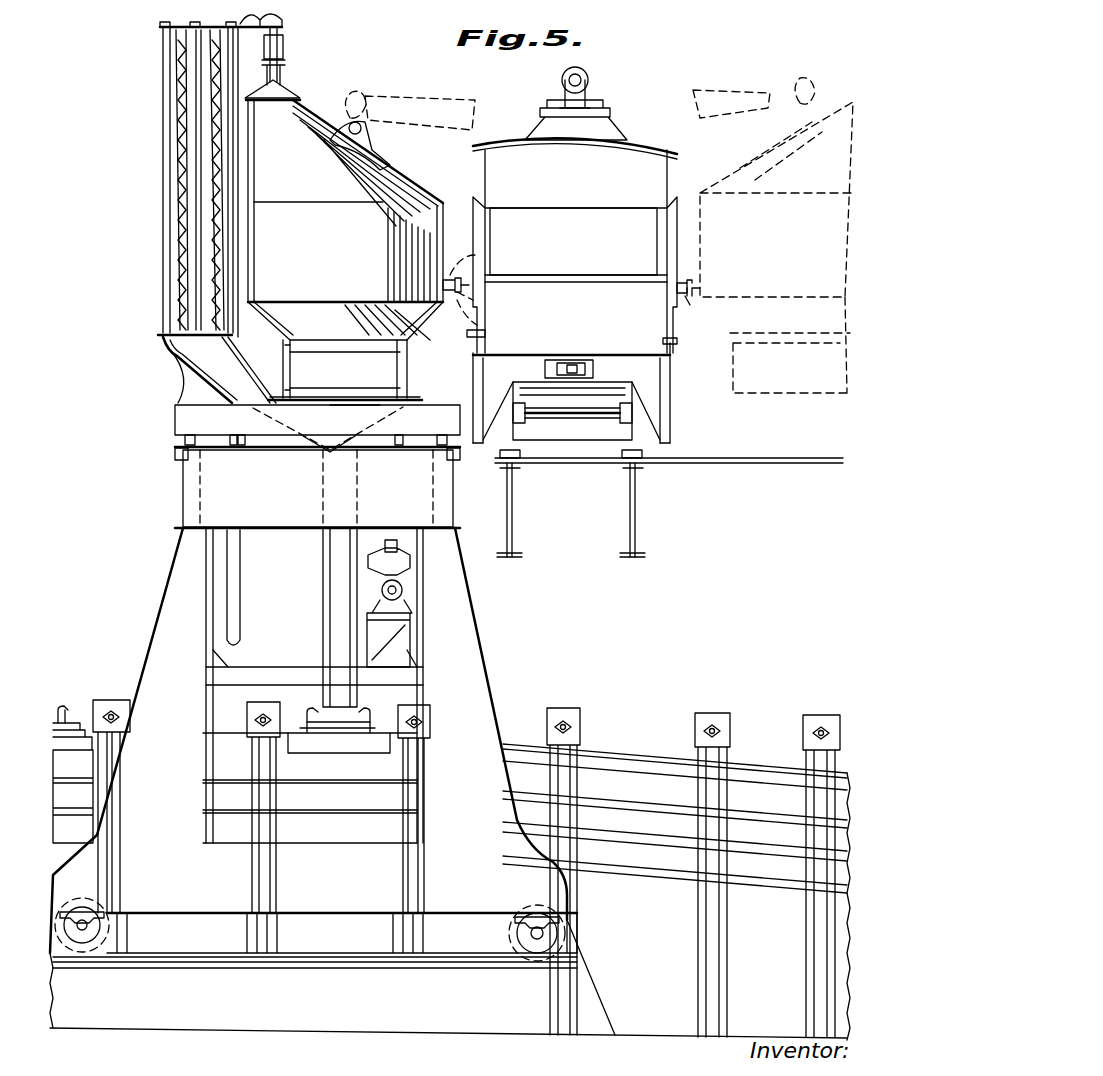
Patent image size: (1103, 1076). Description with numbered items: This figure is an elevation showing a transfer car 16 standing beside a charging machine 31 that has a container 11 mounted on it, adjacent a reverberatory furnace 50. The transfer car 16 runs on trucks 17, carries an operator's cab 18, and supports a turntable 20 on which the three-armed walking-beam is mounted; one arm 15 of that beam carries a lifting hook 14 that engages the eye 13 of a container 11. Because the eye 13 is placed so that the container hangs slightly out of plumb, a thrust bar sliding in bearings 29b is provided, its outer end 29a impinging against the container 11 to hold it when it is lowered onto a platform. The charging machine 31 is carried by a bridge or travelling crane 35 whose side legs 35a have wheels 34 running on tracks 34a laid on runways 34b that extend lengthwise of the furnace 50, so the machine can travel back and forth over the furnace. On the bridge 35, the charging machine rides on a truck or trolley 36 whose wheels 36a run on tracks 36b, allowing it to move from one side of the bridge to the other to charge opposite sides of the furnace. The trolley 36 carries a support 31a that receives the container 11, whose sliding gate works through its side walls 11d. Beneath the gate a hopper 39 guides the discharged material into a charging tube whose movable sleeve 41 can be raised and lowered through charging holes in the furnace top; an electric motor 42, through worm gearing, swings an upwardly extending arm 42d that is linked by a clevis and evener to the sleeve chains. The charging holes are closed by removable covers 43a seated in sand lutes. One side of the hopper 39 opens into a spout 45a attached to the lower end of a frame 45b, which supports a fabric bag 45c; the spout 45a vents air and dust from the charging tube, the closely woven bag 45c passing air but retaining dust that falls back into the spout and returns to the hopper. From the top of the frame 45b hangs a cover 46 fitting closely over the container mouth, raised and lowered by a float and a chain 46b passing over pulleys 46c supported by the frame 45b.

The container 11 is at (410, 185).
The side walls 11d is at (345, 370).
The eye 13 is at (375, 140).
The lifting hook 14 is at (360, 90).
The arm 15 is at (425, 98).
The transfer car 16 is at (655, 333).
The trucks 17 is at (575, 420).
The operator's cab 18 is at (573, 187).
The turntable 20 is at (665, 345).
The outer end of thrust bar 29a is at (462, 270).
The bearings 29b is at (721, 262).
The charging machine 31 is at (314, 685).
The support 31a is at (405, 405).
The wheels 34 is at (92, 950).
The tracks 34a is at (180, 960).
The runways 34b is at (265, 1025).
The bridge or travelling crane 35 is at (190, 500).
The side legs or supports 35a is at (507, 660).
The truck or trolley 36 is at (180, 418).
The wheels 36a is at (445, 432).
The tracks 36b is at (465, 488).
The hopper 39 is at (320, 445).
The movable sleeve 41 is at (323, 577).
The electric motor 42 is at (402, 590).
The upwardly extending arm 42d is at (378, 540).
The covers 43a is at (335, 740).
The spout 45a is at (205, 362).
The frame 45b is at (163, 228).
The fabric bag 45c is at (190, 300).
The cover 46 is at (290, 90).
The chain 46b is at (245, 72).
The pulleys 46c is at (285, 25).
The reverberatory furnace 50 is at (520, 755).